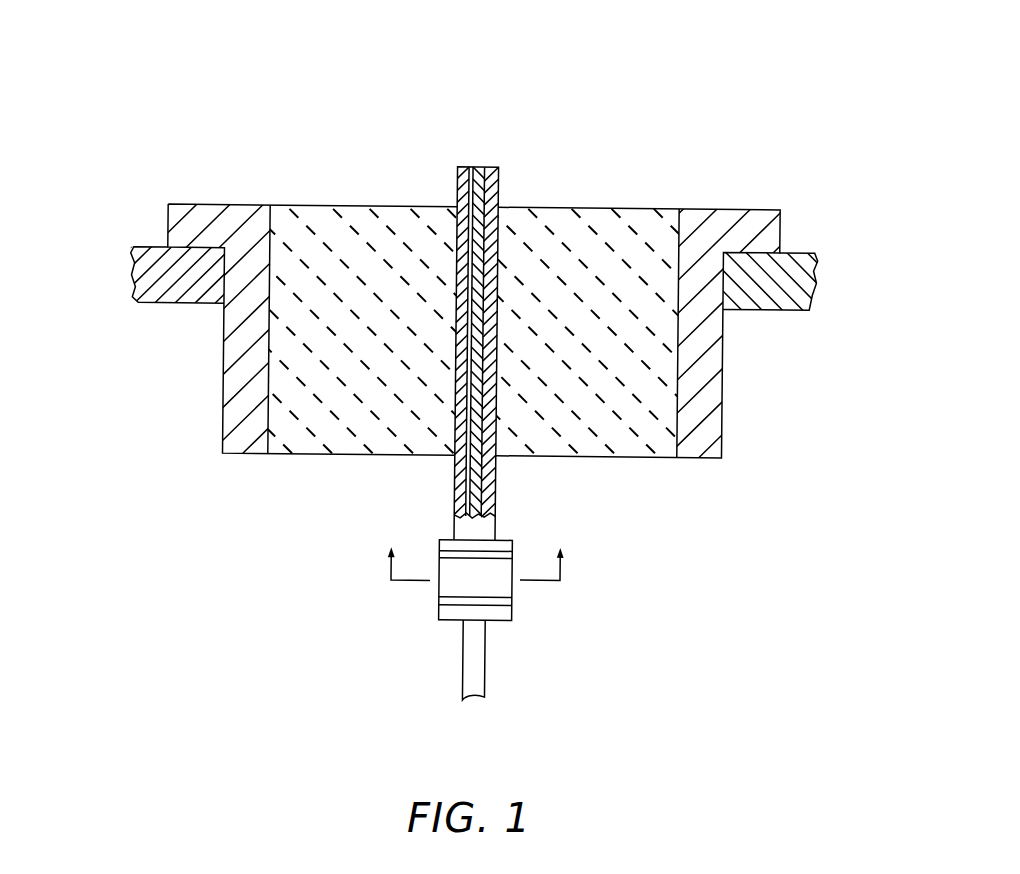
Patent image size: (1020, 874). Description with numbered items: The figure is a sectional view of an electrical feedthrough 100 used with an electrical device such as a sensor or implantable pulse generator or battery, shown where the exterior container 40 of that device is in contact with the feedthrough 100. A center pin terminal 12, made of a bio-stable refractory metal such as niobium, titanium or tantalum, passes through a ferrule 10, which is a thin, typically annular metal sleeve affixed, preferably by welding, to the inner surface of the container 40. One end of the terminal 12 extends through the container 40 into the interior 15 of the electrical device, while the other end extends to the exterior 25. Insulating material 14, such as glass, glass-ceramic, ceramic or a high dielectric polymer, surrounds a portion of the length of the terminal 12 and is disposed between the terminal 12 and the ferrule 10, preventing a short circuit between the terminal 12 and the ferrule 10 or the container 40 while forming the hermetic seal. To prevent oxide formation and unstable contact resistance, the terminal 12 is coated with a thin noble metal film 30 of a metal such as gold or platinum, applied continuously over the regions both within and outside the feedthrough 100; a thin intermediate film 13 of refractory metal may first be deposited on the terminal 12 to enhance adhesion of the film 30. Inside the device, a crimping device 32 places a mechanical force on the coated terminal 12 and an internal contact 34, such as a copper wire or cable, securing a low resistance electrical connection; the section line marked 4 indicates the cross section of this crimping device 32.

The electrical feedthrough 100 is at (178, 118).
The ferrule 10 is at (766, 219).
The exterior container 40 is at (804, 259).
The insulating material 14 is at (636, 211).
The exterior 25 is at (666, 147).
The interior 15 is at (674, 525).
The noble metal film 30 is at (483, 321).
The intermediate film 13 is at (466, 167).
The center pin terminal 12 is at (480, 167).
The crimping device 32 is at (502, 547).
The internal contact 34 is at (481, 680).
The section line 4- 4 is at (477, 562).